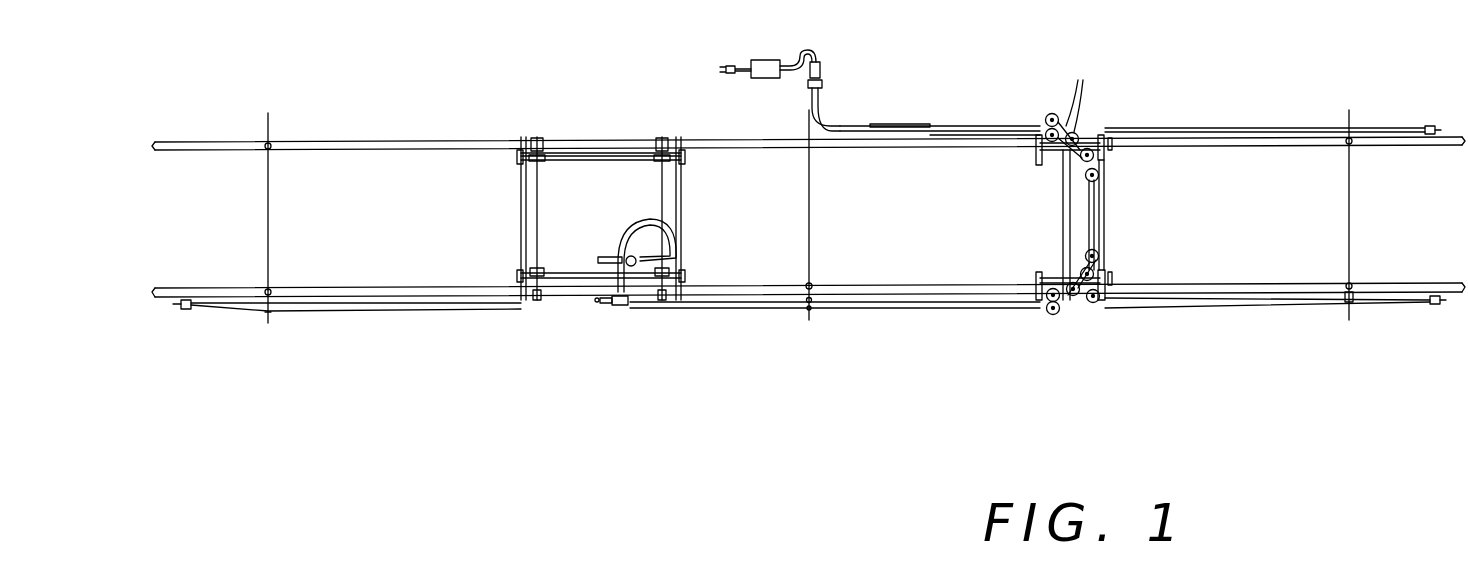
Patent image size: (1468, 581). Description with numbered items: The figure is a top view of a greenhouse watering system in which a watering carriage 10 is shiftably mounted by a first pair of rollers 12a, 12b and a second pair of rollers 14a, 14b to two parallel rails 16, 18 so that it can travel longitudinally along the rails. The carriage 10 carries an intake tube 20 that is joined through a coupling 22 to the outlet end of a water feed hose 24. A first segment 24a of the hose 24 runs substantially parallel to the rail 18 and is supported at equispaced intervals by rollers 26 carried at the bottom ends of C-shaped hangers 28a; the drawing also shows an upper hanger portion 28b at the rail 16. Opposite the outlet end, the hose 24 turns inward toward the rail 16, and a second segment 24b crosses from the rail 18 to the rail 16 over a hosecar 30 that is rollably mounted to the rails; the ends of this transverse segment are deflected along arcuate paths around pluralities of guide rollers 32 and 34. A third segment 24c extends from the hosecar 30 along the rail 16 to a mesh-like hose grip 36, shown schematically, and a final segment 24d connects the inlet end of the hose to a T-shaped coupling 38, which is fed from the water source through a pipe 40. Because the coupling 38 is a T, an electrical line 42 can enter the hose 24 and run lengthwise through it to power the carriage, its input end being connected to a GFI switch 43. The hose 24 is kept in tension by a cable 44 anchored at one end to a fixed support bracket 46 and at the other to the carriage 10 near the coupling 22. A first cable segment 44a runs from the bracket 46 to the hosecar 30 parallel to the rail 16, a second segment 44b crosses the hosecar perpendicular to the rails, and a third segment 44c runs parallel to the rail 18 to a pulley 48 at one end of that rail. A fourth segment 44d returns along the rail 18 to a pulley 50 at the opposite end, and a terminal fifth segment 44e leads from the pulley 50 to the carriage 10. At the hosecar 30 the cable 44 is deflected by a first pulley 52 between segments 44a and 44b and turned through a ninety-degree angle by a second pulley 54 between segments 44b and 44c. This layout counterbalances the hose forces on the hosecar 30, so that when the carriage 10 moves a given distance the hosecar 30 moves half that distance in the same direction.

The watering carriage 10 is at (683, 205).
The roller of first pair 12a is at (560, 135).
The roller of first pair 12b is at (668, 130).
The roller of second pair 14a is at (537, 295).
The roller of second pair 14b is at (665, 300).
The rail 16 is at (375, 145).
The rail 18 is at (357, 290).
The intake tube 20 is at (645, 231).
The coupling 22 is at (620, 305).
The feed hose 24 is at (973, 124).
The first hose segment 24a is at (910, 300).
The second hose segment 24b is at (1100, 178).
The third hose segment 24c is at (990, 140).
The final hose segment 24d is at (838, 112).
The roller 26 is at (275, 300).
The C-shaped hanger 28a is at (268, 320).
The upper post portion 28b is at (268, 131).
The hosecar 30 is at (1060, 222).
The guide rollers 32 is at (1072, 119).
The guide rollers 34 is at (1058, 300).
The hose grip 36 is at (870, 135).
The coupling 38 is at (822, 76).
The pipe 40 is at (810, 84).
The electrical line 42 is at (800, 46).
The GFI switch 43 is at (765, 62).
The cable 44 is at (1212, 128).
The first cable segment 44a is at (1308, 128).
The second cable segment 44b is at (1096, 225).
The third cable segment 44c is at (1280, 300).
The fourth cable segment 44d is at (1195, 308).
The fifth cable segment 44e is at (435, 305).
The fixed support bracket 46 is at (1434, 128).
The pulley 48 is at (1435, 306).
The pulley 50 is at (180, 303).
The first pulley 52 is at (1103, 136).
The second pulley 54 is at (1098, 302).